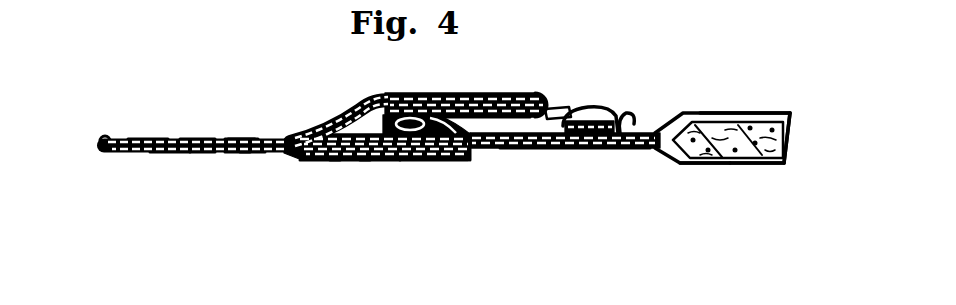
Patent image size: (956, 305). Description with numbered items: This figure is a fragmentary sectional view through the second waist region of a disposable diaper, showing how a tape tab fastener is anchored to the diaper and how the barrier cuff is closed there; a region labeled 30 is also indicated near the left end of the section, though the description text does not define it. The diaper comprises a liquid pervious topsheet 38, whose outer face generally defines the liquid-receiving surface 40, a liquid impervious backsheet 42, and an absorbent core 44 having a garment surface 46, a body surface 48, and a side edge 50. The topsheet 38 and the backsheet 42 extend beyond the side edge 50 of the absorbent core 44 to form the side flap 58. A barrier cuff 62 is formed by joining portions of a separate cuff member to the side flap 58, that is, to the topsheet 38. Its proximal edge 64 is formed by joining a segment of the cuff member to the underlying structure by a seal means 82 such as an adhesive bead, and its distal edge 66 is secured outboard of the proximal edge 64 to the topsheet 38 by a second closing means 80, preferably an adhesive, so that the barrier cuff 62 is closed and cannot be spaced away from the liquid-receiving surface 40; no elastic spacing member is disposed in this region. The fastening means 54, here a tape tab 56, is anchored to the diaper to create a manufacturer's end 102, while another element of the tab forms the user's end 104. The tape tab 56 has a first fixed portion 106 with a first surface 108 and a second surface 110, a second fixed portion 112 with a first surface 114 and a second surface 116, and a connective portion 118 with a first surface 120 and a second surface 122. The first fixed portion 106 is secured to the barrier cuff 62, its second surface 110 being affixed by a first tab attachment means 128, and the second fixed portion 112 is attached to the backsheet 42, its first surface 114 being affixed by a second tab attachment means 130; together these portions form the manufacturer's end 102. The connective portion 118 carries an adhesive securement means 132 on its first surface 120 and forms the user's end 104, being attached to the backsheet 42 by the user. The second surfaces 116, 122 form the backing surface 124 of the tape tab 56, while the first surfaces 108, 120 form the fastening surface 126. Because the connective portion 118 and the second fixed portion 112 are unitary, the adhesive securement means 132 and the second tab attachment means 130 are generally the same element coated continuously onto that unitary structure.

The housing body 30 is at (288, 156).
The topsheet 38 is at (757, 114).
The liquid-receiving surface 40 is at (737, 120).
The backsheet 42 is at (752, 163).
The absorbent core 44 is at (767, 142).
The garment surface 46 is at (722, 163).
The body surface 48 is at (720, 113).
The side edge 50 is at (669, 156).
The fastening means 54 is at (237, 97).
The tape tab fastener 56 is at (237, 97).
The side flap 58 is at (535, 150).
The barrier cuff 62 is at (564, 108).
The proximal edge 64 is at (624, 122).
The distal edge 66 is at (370, 96).
The second closing means 80 is at (405, 160).
The seal means 82 is at (592, 150).
The manufacturer's end 102 is at (323, 120).
The user's end 104 is at (126, 160).
The first fixed portion 106 is at (477, 97).
The first surface of the first fixed portion 108 is at (394, 96).
The second surface of the first fixed portion 110 is at (438, 97).
The second fixed portion 112 is at (362, 160).
The first surface of the second fixed portion 114 is at (330, 160).
The second surface of the second fixed portion 116 is at (380, 160).
The connective portion 118 is at (207, 155).
The first surface of the connective portion 120 is at (180, 155).
The second surface of the connective portion 122 is at (244, 155).
The backing surface 124 is at (254, 163).
The fastening surface 126 is at (203, 133).
The first tab attachment means 128 is at (531, 97).
The second tab attachment means 130 is at (450, 160).
The adhesive securement means 132 is at (165, 140).